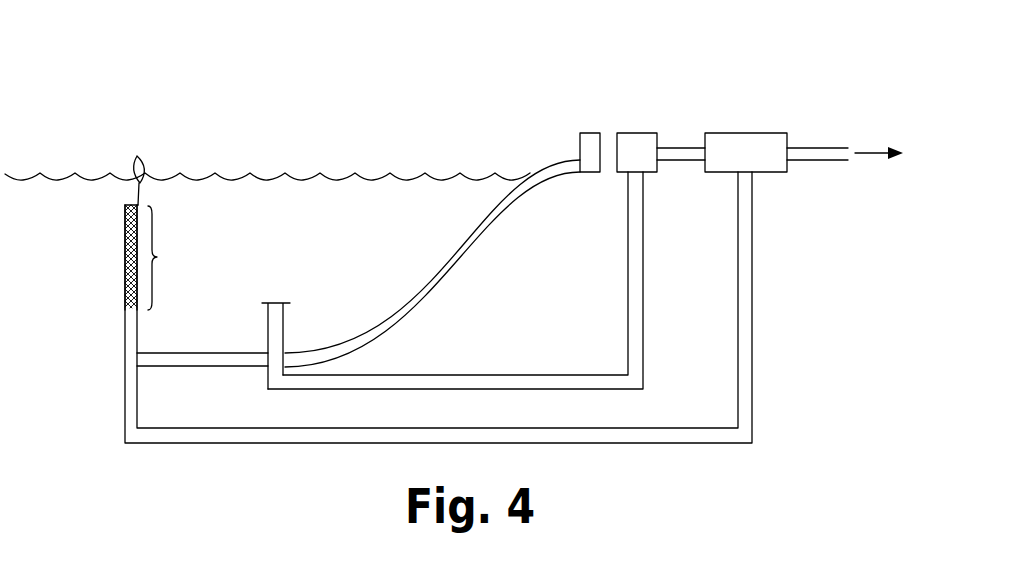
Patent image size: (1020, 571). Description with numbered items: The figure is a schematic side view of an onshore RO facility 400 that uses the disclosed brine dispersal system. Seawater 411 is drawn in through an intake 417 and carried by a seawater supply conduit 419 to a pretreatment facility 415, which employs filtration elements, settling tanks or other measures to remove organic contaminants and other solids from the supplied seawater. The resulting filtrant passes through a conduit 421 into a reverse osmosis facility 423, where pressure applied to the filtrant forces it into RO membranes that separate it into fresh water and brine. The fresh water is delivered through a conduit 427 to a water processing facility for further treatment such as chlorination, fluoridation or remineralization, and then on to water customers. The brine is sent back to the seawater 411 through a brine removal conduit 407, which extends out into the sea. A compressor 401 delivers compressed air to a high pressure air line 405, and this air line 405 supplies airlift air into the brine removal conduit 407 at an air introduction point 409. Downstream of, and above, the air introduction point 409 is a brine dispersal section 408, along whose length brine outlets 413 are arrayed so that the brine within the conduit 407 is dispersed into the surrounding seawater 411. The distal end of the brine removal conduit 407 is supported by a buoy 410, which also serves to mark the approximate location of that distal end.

The onshore RO facility 400 is at (793, 48).
The compressor 401 is at (592, 131).
The high pressure air line 405 is at (348, 340).
The brine removal conduit 407 is at (753, 320).
The brine dispersal section 408 is at (160, 257).
The air introduction point 409 is at (145, 352).
The buoy 410 is at (150, 164).
The seawater 411 is at (57, 210).
The brine outlets 413 is at (125, 287).
The pretreatment facility 415 is at (637, 131).
The intake 417 is at (278, 302).
The seawater supply conduit 419 is at (648, 273).
The conduit 421 is at (685, 147).
The reverse osmosis facility 423 is at (755, 131).
The conduit 427 is at (827, 147).